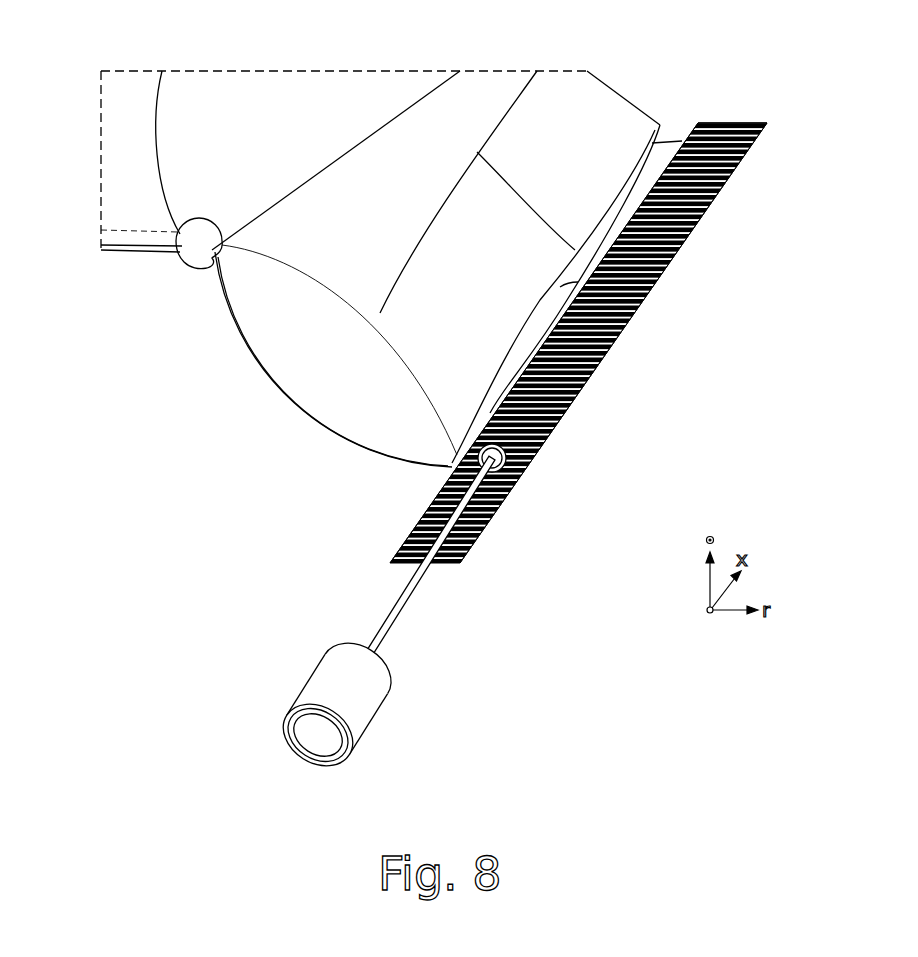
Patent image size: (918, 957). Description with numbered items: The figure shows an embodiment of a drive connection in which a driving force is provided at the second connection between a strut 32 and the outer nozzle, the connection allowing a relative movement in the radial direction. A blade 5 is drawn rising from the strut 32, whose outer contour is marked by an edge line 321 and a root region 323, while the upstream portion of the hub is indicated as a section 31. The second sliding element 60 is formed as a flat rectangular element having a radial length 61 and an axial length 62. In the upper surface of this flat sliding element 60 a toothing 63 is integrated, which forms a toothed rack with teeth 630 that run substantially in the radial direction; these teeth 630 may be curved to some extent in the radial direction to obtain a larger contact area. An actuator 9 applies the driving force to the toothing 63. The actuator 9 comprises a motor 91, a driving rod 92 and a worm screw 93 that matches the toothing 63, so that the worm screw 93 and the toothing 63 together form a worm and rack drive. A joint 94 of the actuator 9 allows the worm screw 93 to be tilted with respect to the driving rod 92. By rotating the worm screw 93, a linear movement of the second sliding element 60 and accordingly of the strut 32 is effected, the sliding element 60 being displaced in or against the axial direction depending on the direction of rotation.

The blade 5 is at (246, 82).
The actuator 9 is at (427, 623).
The upstream section of hub 31 is at (117, 168).
The strut 32 is at (352, 268).
The hub edge line 321 is at (300, 287).
The blade root fillet 323 is at (604, 318).
The second sliding element 60 is at (683, 243).
The radial length 61 is at (735, 122).
The axial length 62 is at (723, 185).
The toothing 63 is at (598, 355).
The teeth 630 is at (583, 388).
The motor 91 is at (326, 688).
The driving rod 92 is at (420, 598).
The worm screw 93 is at (512, 456).
The joint 94 is at (512, 468).